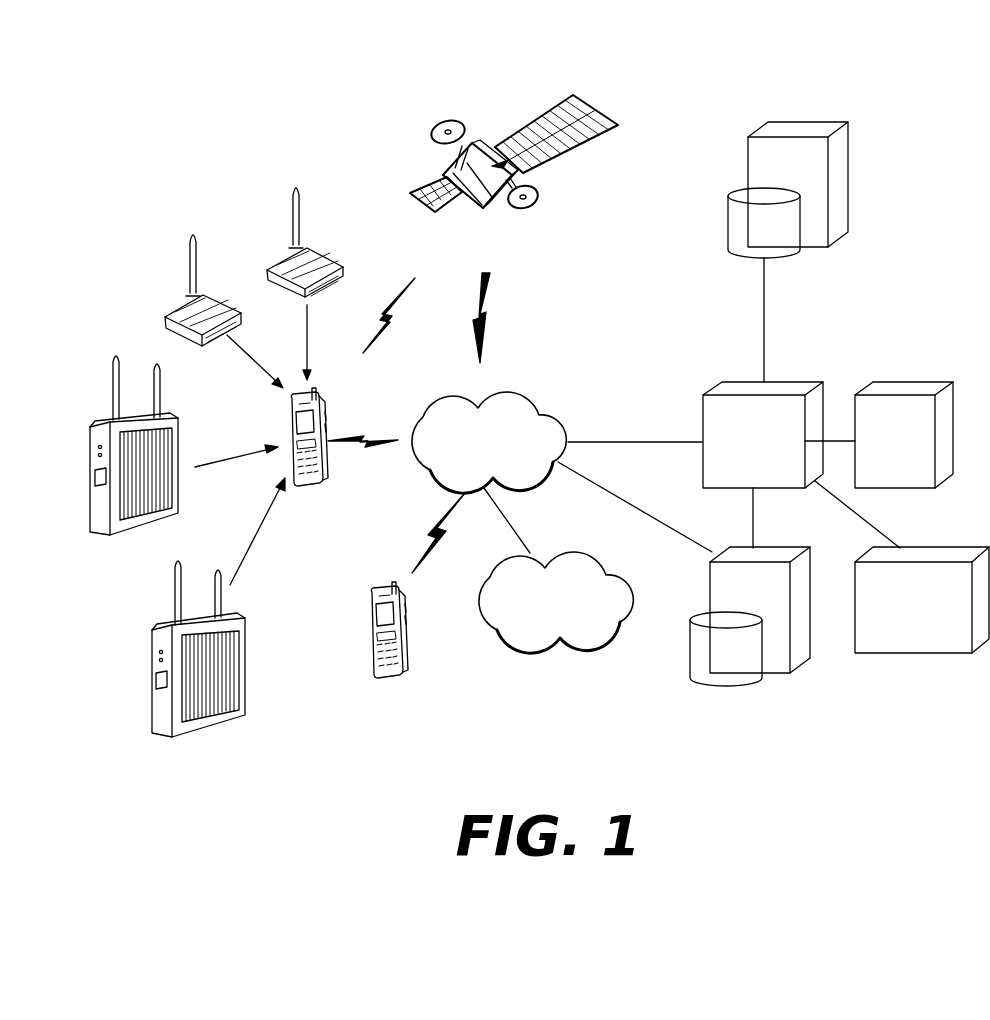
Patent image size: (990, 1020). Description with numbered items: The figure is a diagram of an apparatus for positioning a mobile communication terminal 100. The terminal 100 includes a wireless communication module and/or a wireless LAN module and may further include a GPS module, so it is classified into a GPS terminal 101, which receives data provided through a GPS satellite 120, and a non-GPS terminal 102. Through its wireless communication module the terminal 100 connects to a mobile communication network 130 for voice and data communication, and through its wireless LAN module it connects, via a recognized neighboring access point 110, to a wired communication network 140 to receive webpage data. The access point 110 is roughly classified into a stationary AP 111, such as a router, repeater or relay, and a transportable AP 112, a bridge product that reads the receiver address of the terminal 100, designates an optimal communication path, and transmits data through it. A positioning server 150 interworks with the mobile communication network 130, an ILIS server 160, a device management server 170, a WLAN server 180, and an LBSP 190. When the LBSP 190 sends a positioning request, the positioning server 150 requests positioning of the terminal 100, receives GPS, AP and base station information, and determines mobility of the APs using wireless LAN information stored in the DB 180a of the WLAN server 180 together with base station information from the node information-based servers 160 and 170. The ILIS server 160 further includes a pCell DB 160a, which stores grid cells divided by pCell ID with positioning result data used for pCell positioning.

The mobile communication terminal 100 is at (327, 502).
The GPS terminal 101 is at (318, 487).
The non-GPS terminal 102 is at (372, 597).
The access point 110 is at (100, 258).
The stationary AP 111 is at (188, 303).
The transportable AP 112 is at (98, 425).
The GPS satellite 120 is at (478, 142).
The mobile communication network 130 is at (519, 395).
The wired communication network 140 is at (582, 555).
The positioning server 150 is at (800, 382).
The ILIS server 160 is at (784, 549).
The pCell DB 160a is at (755, 681).
The device management server 170 is at (950, 549).
The WLAN server 180 is at (822, 122).
The DB 180a is at (792, 256).
The LBSP 190 is at (912, 382).